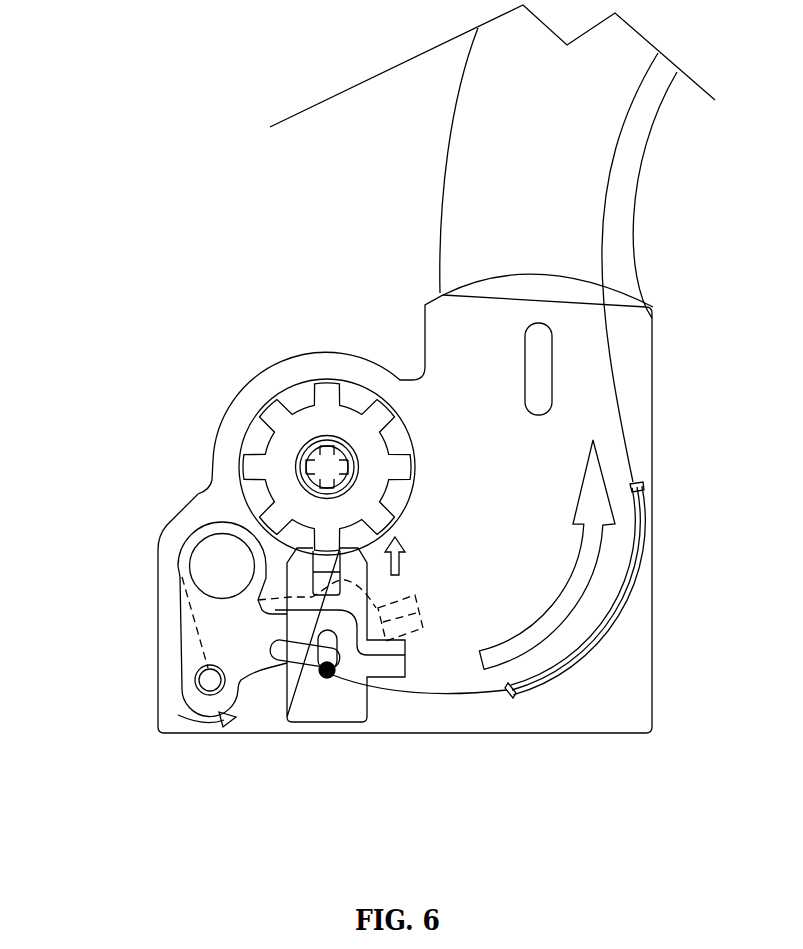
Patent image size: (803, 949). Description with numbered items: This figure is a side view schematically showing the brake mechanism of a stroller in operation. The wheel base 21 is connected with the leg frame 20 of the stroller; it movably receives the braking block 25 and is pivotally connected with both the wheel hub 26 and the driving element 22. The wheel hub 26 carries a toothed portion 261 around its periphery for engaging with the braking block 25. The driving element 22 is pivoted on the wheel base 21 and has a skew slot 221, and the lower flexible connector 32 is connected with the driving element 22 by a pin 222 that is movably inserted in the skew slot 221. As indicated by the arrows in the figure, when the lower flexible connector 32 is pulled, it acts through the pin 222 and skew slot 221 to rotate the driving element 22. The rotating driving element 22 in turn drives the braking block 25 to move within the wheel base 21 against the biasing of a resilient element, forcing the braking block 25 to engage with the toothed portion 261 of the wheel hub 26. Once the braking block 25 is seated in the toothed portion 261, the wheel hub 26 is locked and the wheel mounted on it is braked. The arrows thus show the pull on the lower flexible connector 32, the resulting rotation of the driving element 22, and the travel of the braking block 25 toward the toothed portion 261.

The leg frame 20 is at (463, 155).
The lower flexible connector 32 is at (605, 207).
The wheel base 21 is at (165, 675).
The driving element 22 is at (192, 608).
The skew slot 221 is at (284, 678).
The pin 222 is at (325, 678).
The braking block 25 is at (347, 712).
The wheel hub 26 is at (372, 453).
The toothed portion 261 is at (272, 398).